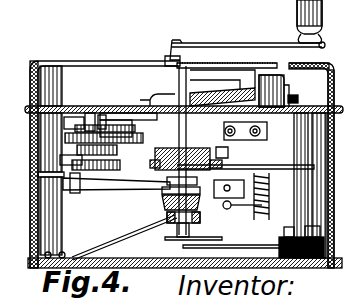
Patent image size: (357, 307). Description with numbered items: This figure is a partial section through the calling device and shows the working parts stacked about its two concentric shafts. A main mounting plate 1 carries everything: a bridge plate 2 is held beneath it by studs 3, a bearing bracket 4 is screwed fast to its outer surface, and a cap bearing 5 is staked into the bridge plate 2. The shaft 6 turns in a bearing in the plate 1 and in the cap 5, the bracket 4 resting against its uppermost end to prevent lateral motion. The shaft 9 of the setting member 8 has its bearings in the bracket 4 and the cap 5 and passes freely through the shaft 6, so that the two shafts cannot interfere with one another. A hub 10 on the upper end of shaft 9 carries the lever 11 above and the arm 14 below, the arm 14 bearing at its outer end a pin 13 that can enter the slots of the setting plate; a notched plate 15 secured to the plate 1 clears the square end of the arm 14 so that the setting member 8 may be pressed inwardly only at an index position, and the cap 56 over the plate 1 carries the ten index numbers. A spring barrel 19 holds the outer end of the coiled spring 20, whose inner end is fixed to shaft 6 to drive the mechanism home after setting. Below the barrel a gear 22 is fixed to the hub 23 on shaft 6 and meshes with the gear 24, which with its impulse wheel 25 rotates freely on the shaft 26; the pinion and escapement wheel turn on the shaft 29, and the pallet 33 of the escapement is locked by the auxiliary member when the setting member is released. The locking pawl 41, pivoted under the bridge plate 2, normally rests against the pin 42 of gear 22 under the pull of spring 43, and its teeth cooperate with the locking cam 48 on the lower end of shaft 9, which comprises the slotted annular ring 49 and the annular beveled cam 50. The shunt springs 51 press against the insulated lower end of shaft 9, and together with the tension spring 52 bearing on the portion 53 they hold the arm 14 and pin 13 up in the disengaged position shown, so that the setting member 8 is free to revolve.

The main mounting plate 1 is at (32, 105).
The bridge plate 2 is at (314, 170).
The studs 3 is at (305, 127).
The bearing bracket 4 is at (128, 105).
The cap bearing 5 is at (168, 180).
The shaft 6 is at (152, 100).
The setting member 8 is at (179, 42).
The shaft 9 is at (178, 218).
The hub 10 is at (165, 57).
The lever 11 is at (219, 45).
The pin 13 is at (258, 75).
The arm 14 is at (237, 72).
The notched plate 15 is at (280, 84).
The spring barrel 19 is at (118, 112).
The coiled spring 20 is at (143, 140).
The gear 22 is at (234, 143).
The hub 23 is at (155, 155).
The gear 24 is at (62, 138).
The impulse wheel 25 is at (80, 126).
The shaft 26 is at (92, 117).
The shaft 29 is at (87, 116).
The pallet 33 is at (38, 163).
The locking pawl 41 is at (269, 185).
The pin 42 is at (221, 152).
The spring 43 is at (268, 207).
The locking cam 48 is at (168, 182).
The annular ring 49 is at (163, 191).
The annular beveled cam 50 is at (168, 207).
The shunt springs 51 is at (230, 244).
The tension spring 52 is at (132, 236).
The portion 53 is at (190, 226).
The cap 56 is at (329, 63).